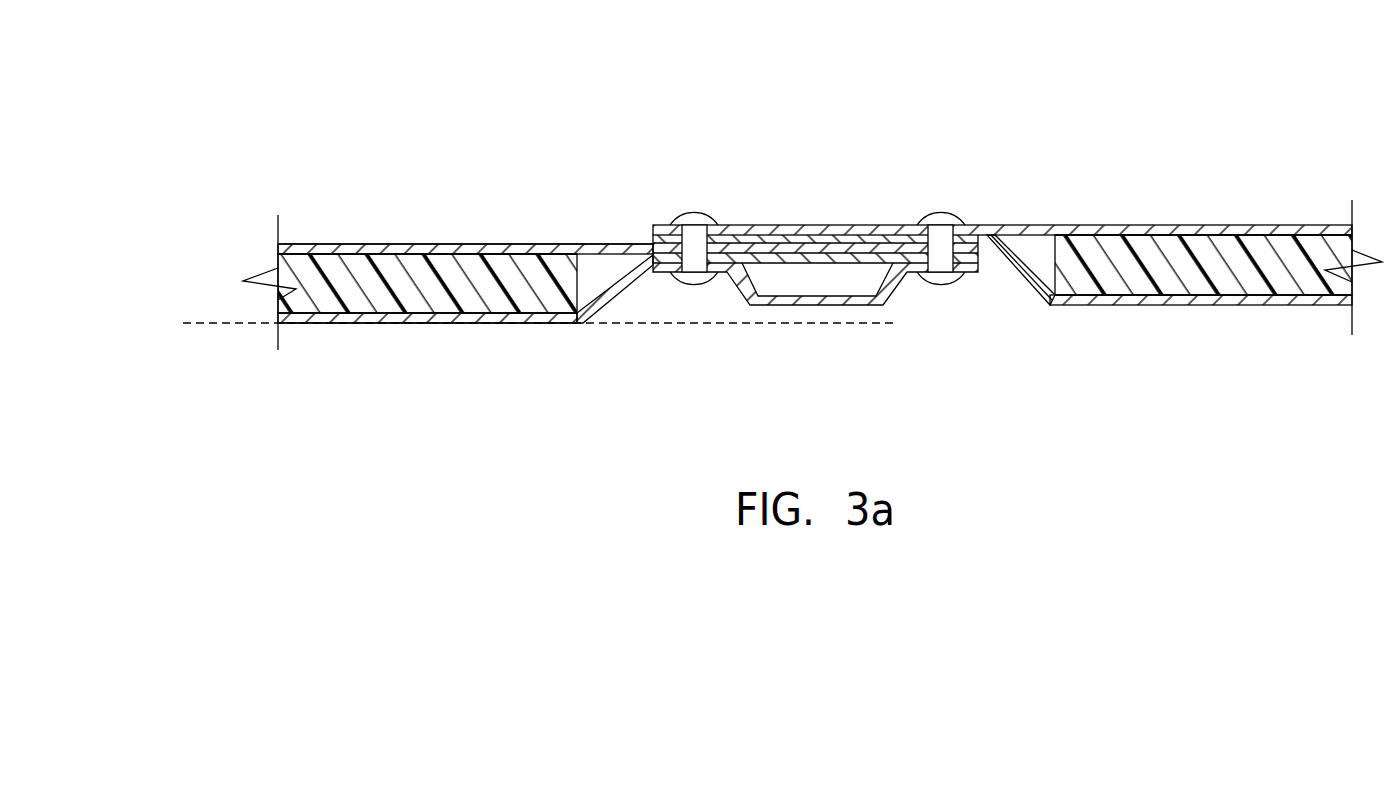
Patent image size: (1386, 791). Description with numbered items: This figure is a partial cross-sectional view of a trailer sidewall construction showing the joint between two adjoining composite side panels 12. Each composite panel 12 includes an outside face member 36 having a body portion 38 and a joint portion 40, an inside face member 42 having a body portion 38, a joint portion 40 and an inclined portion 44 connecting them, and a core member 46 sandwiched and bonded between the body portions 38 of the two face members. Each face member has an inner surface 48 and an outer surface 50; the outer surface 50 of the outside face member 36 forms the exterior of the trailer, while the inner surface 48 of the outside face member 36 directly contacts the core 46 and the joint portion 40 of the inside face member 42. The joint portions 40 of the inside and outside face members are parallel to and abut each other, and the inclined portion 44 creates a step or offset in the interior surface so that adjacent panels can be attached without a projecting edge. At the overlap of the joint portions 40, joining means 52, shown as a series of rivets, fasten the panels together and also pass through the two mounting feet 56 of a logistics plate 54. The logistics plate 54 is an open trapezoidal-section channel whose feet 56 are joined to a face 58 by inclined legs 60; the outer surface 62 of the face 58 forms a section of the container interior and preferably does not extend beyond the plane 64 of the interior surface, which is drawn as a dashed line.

The composite side panel 12 is at (561, 98).
The outside face member 36 is at (303, 245).
The body portion 38 is at (373, 247).
The joint portion 40 is at (748, 258).
The inside face member 42 is at (316, 323).
The inclined portion 44 is at (613, 295).
The core member 46 is at (508, 297).
The inner surface 48 is at (514, 263).
The outer surface 50 is at (480, 245).
The joining means 52 is at (940, 212).
The logistics plate 54 is at (853, 318).
The mounting feet 56 is at (667, 278).
The face 58 is at (790, 300).
The inclined legs 60 is at (730, 288).
The outer surface of the face 62 is at (820, 307).
The plane of the interior surface 64 is at (210, 323).